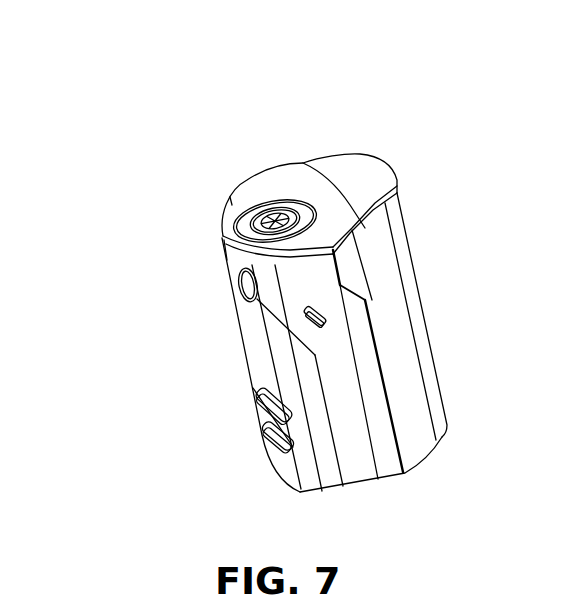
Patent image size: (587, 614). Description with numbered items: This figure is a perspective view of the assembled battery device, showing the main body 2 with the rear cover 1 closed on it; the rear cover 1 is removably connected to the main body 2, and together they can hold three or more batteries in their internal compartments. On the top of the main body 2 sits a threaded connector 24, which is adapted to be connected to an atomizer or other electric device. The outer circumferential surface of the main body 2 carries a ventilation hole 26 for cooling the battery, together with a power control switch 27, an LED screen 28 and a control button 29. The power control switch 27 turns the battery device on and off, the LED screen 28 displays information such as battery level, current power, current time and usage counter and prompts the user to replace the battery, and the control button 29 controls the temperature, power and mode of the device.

The rear cover 1 is at (400, 127).
The main body 2 is at (238, 152).
The threaded connector 24 is at (258, 222).
The ventilation hole 26 is at (322, 316).
The power control switch 27 is at (240, 287).
The LED screen 28 is at (257, 360).
The control button 29 is at (263, 420).